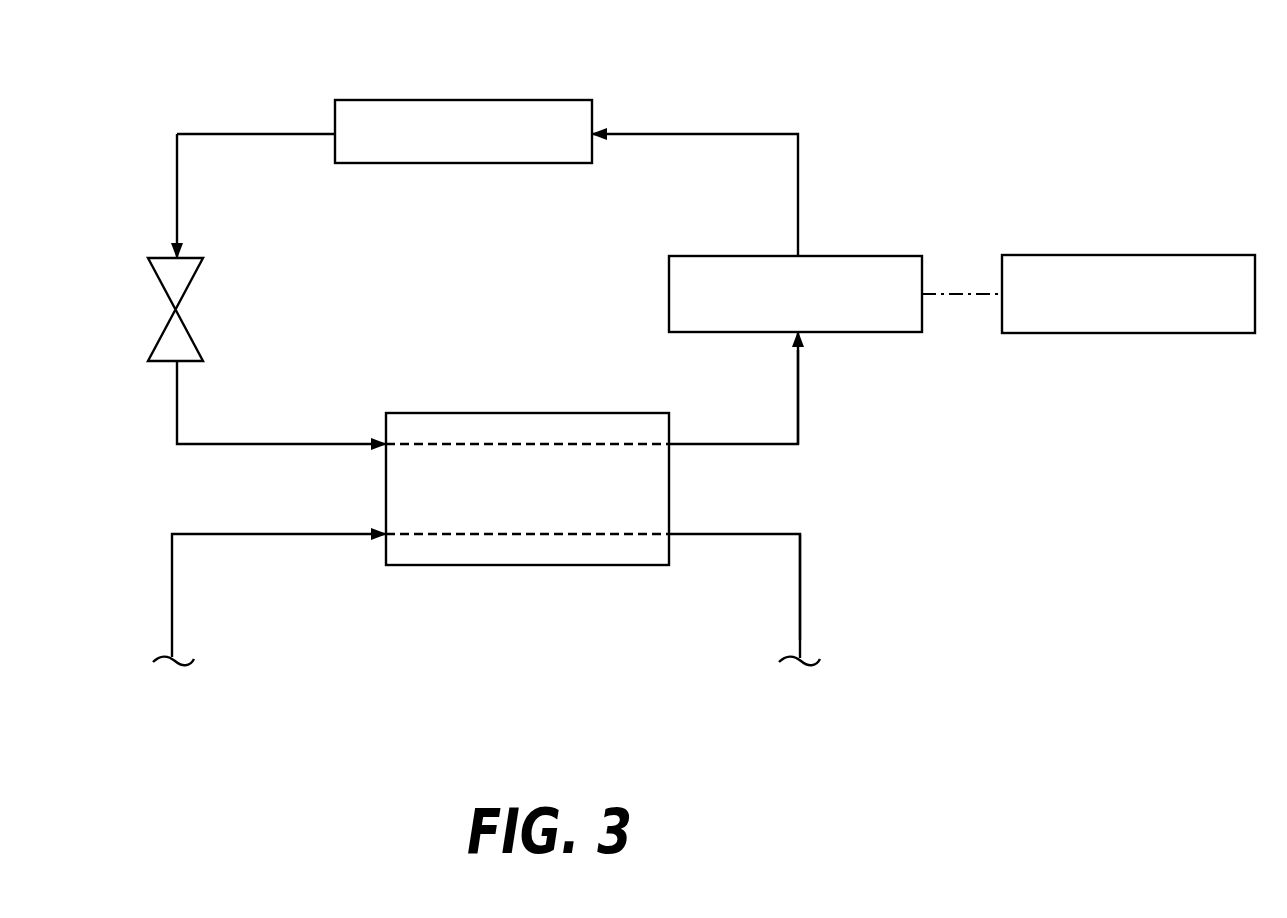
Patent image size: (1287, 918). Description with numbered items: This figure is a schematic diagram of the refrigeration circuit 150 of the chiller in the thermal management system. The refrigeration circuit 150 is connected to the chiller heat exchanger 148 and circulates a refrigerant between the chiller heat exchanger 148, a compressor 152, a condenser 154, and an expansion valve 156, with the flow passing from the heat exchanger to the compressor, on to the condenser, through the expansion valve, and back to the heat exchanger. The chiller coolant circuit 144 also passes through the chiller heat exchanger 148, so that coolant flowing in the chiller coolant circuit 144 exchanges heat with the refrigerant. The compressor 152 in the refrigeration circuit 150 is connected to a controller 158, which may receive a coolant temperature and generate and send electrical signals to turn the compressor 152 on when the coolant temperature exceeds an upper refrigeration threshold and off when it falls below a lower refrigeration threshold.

The chiller coolant circuit 144 is at (800, 560).
The chiller heat exchanger 148 is at (669, 480).
The refrigeration circuit 150 is at (798, 392).
The compressor 152 is at (902, 256).
The condenser 154 is at (575, 100).
The expansion valve 156 is at (194, 258).
The controller 158 is at (1167, 255).